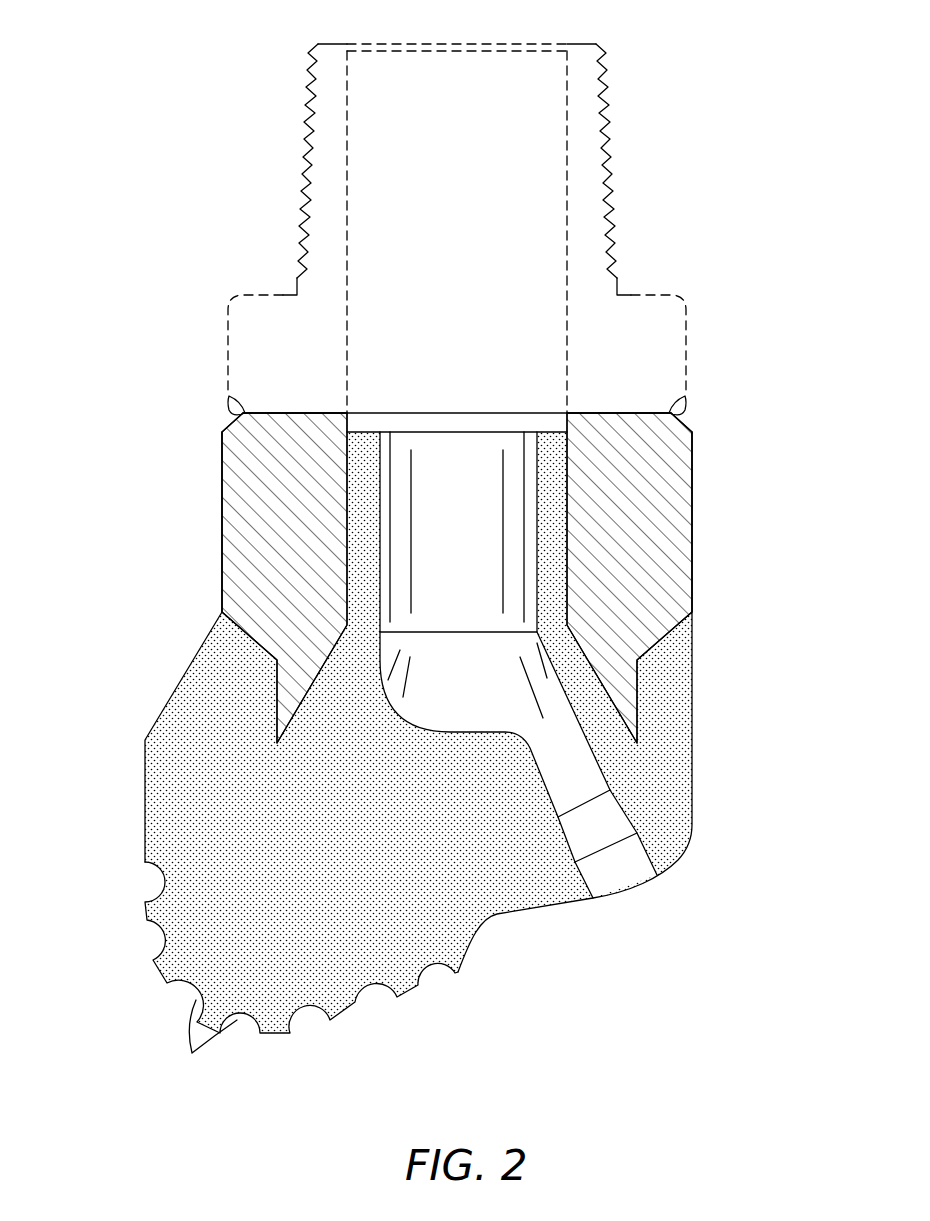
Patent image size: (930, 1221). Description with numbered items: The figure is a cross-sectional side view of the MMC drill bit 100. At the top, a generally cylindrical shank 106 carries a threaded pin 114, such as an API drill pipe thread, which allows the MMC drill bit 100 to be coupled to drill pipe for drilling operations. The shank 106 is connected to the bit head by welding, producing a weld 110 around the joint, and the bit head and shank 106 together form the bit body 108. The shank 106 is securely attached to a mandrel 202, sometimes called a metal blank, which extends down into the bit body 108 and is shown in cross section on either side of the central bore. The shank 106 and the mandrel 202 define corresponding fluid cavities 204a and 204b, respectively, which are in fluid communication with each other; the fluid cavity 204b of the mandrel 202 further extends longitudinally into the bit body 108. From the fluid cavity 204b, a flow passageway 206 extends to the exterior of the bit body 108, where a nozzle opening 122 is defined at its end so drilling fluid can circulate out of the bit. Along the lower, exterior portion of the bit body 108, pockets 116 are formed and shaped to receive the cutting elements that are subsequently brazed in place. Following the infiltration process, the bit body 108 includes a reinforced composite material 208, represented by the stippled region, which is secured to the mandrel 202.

The MMC drill bit 100 is at (645, 119).
The shank 106 is at (700, 335).
The bit body 108 is at (735, 681).
The weld 110 is at (226, 413).
The threaded pin 114 is at (305, 205).
The pockets 116 is at (158, 872).
The nozzle openings 122 is at (592, 893).
The mandrel 202 is at (457, 578).
The fluid cavity of the shank 204a is at (457, 232).
The fluid cavity of the mandrel 204b is at (518, 665).
The flow passageway 206 is at (597, 837).
The reinforced composite material 208 is at (418, 732).